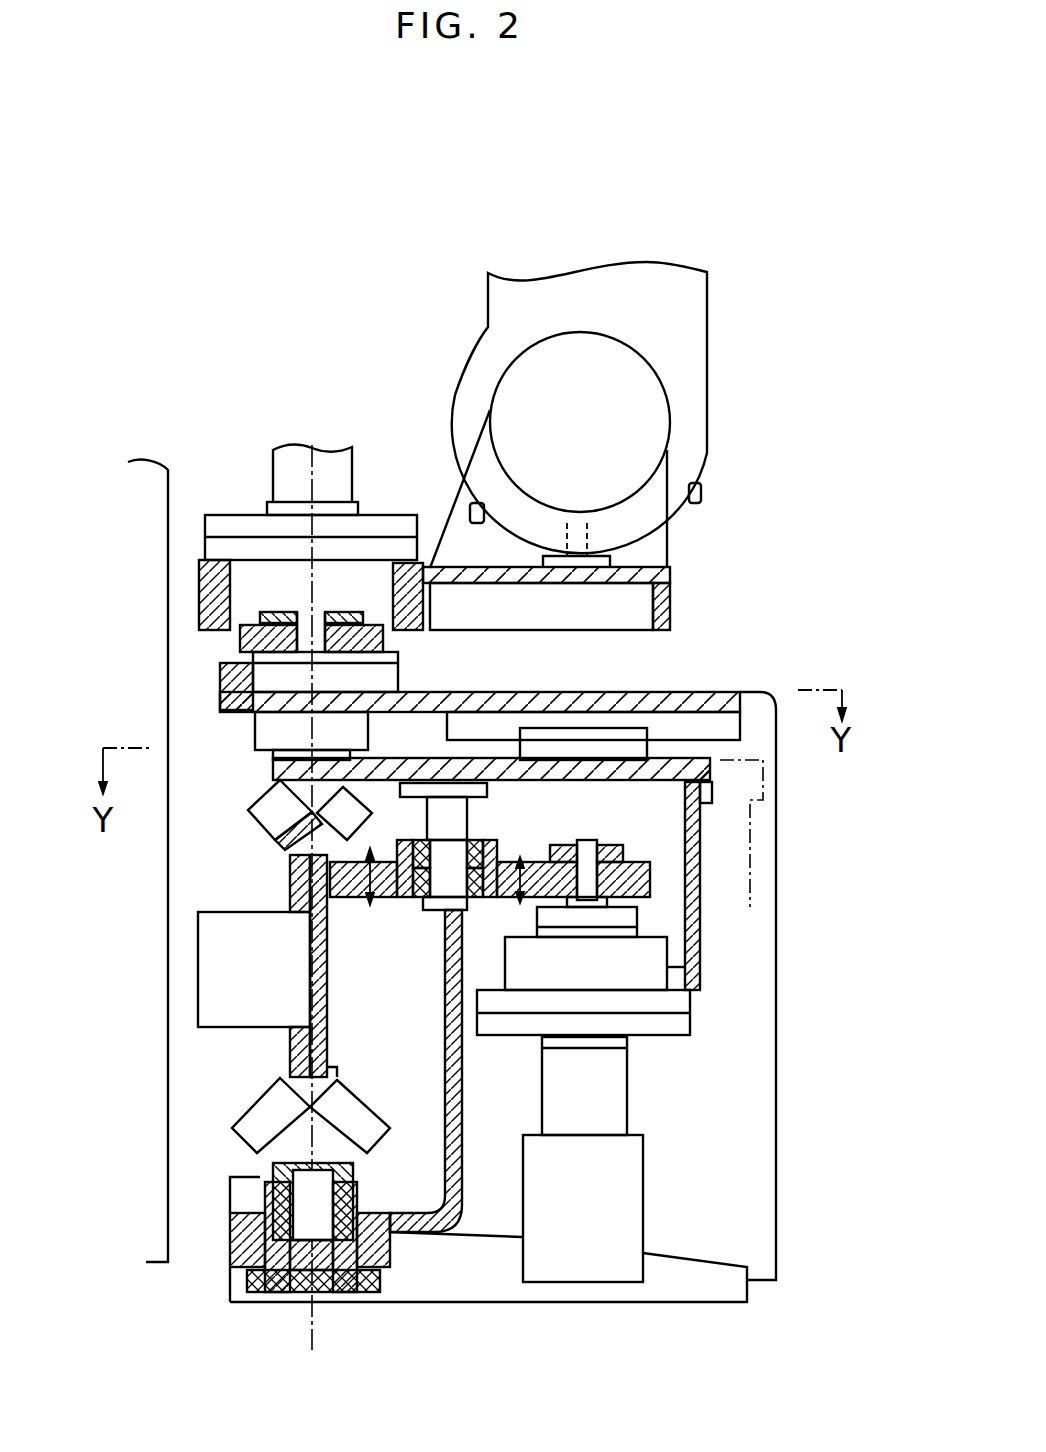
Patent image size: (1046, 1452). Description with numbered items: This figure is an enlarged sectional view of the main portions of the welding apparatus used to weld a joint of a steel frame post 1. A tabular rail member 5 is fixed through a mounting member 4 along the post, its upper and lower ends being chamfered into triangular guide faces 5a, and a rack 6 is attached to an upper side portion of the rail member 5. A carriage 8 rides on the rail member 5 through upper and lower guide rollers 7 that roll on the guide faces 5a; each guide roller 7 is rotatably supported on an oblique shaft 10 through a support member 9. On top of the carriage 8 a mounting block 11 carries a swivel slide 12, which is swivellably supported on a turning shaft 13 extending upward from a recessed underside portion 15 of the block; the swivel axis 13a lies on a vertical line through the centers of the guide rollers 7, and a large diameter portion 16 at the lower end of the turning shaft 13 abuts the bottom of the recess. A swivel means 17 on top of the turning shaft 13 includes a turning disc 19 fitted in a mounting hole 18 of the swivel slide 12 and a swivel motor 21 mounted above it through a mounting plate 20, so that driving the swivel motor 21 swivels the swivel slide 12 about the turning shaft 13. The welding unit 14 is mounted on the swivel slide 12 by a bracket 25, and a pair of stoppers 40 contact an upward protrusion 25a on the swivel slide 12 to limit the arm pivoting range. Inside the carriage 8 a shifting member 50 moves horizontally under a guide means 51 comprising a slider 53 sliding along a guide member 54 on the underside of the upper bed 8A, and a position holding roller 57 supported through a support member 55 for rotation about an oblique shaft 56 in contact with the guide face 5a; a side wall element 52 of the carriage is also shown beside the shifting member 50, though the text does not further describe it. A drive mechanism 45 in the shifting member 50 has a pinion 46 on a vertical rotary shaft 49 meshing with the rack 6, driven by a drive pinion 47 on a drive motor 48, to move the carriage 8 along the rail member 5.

The steel frame post 1 is at (170, 1210).
The mounting member 4 is at (205, 960).
The rail member 5 is at (330, 1040).
The guide face 5a is at (330, 860).
The rack 6 is at (358, 887).
The guide rollers 7 is at (267, 1133).
The carriage 8 is at (503, 1283).
The upper bed 8A is at (703, 697).
The support member 9 is at (357, 1157).
The oblique shaft 10 is at (255, 1100).
The mounting block 11 is at (400, 662).
The swivel slide 12 is at (200, 602).
The turning shaft 13 is at (262, 643).
The swivel axis 13a is at (328, 1040).
The welding unit 14 is at (712, 322).
The recessed underside portion 15 is at (257, 713).
The large diameter portion 16 is at (258, 686).
The swivel means 17 is at (262, 466).
The mounting hole 18 is at (400, 562).
The turning disc 19 is at (258, 568).
The mounting plate 20 is at (372, 522).
The swivel motor 21 is at (338, 455).
The bracket 25 is at (668, 530).
The upward protrusion 25a is at (613, 558).
The stoppers 40 is at (477, 520).
The drive mechanism 45 is at (702, 1005).
The pinion 46 is at (507, 847).
The drive pinion 47 is at (645, 887).
The drive motor 48 is at (625, 1205).
The rotary shaft 49 is at (470, 832).
The shifting member 50 is at (597, 752).
The guide means 51 is at (714, 730).
The side wall 52 is at (693, 840).
The slider 53 is at (648, 712).
The guide member 54 is at (560, 740).
The support member 55 is at (380, 763).
The oblique shaft 56 is at (362, 828).
The position holding roller 57 is at (270, 812).